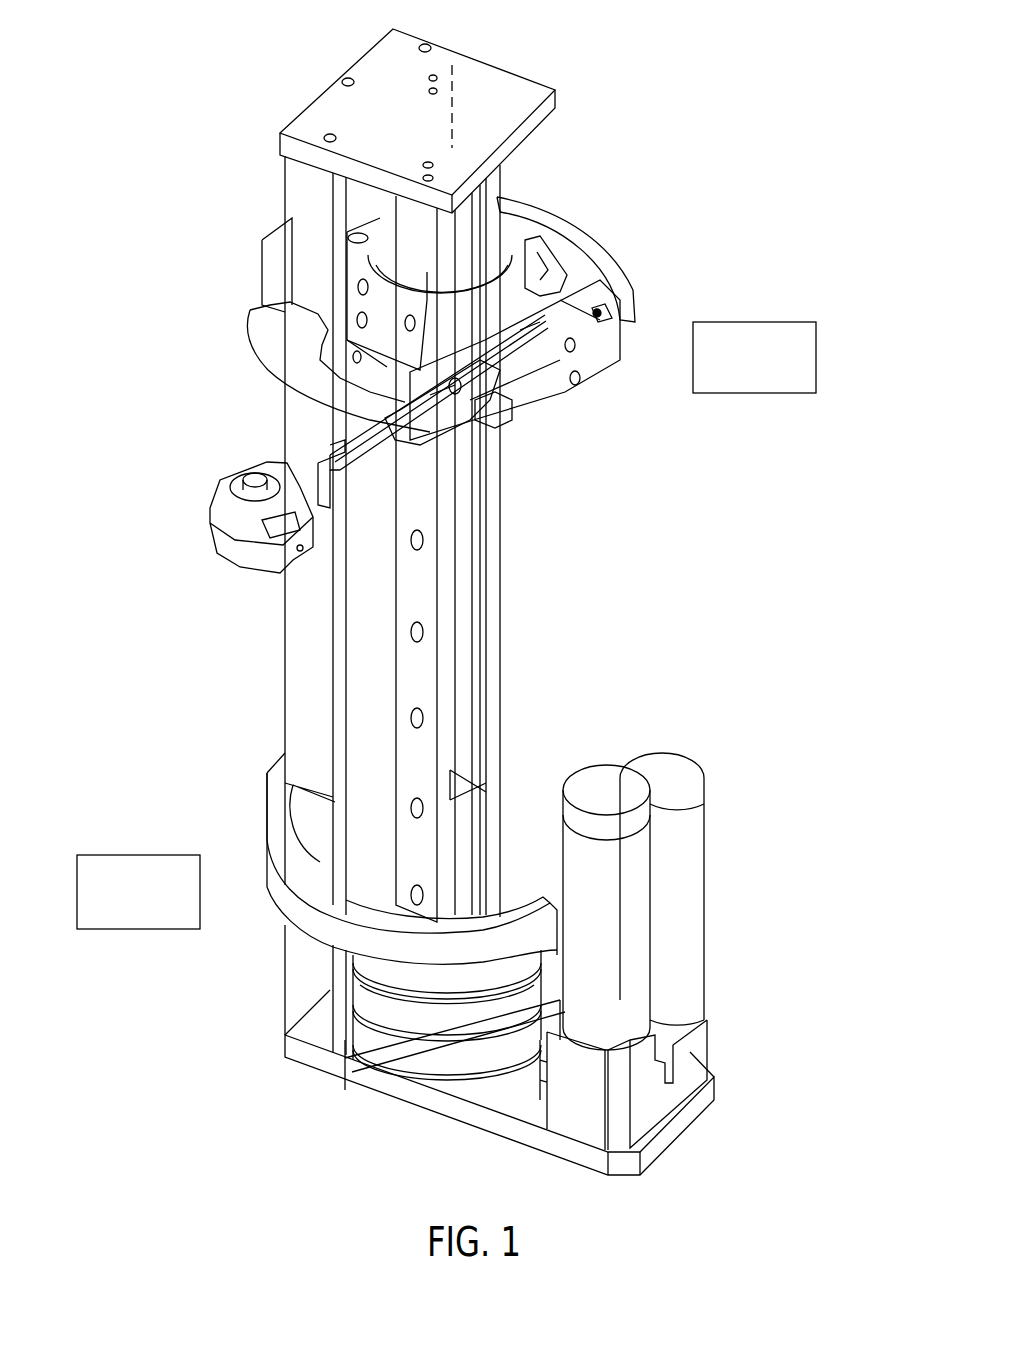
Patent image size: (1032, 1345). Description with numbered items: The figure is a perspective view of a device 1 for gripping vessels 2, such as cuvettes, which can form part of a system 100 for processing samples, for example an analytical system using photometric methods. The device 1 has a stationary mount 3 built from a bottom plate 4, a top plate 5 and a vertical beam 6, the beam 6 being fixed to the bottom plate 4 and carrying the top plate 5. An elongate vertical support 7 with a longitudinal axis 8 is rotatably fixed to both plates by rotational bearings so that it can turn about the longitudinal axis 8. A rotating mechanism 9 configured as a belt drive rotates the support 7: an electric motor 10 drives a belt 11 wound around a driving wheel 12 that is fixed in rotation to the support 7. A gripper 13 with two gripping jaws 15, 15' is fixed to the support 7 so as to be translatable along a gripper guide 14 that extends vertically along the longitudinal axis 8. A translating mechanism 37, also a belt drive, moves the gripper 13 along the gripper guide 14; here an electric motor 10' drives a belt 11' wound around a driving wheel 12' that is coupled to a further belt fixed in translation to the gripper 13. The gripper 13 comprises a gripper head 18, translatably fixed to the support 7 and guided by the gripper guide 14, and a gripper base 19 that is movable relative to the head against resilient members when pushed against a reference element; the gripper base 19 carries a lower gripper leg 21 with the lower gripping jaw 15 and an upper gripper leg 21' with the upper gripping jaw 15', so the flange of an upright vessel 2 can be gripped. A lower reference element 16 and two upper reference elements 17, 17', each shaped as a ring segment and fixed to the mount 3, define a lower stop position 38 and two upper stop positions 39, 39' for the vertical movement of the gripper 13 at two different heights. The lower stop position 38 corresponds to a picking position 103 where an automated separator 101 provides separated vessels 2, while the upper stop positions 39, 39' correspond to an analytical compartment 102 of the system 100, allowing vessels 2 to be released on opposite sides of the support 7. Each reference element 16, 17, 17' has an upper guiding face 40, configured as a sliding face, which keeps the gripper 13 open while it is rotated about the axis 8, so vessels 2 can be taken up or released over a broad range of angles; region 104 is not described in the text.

The device for gripping vessels 1 is at (262, 108).
The system for processing samples 100 is at (781, 90).
The vessel 2 is at (318, 483).
The stationary mount 3 is at (300, 217).
The bottom plate 4 is at (327, 1065).
The top plate 5 is at (553, 110).
The vertical beam 6 is at (350, 541).
The elongate vertical support 7 is at (410, 645).
The longitudinal axis 8 is at (452, 97).
The rotating mechanism 9 is at (487, 1065).
The electric motor 10 is at (673, 901).
The electric motor 10' is at (703, 897).
The belt 11 is at (517, 1084).
The belt 11' is at (458, 1085).
The driving wheel 12 is at (428, 1035).
The driving wheel 12' is at (385, 1012).
The gripper 13 is at (550, 382).
The gripper guide 14 is at (470, 533).
The lower gripping jaw 15 is at (469, 416).
The upper gripping jaw 15' is at (291, 454).
The lower reference element 16 is at (527, 943).
The upper reference element 17 is at (589, 259).
The upper reference element 17' is at (303, 367).
The gripper head 18 is at (565, 230).
The gripper base 19 is at (600, 314).
The lower gripper leg 21 is at (478, 419).
The upper gripper leg 21' is at (487, 419).
The translating mechanism 37 is at (490, 1045).
The lower stop position 38 is at (314, 912).
The upper stop position 39 is at (684, 229).
The upper stop position 39' is at (250, 374).
The upper guiding face 40 is at (515, 255).
The automated separator 101 is at (138, 892).
The analytical compartment 102 is at (754, 357).
The picking position 103 is at (214, 943).
The upper region 104 is at (700, 271).